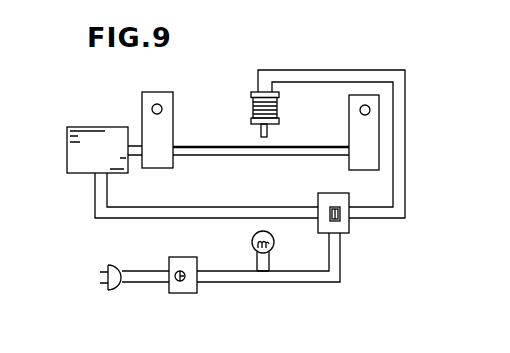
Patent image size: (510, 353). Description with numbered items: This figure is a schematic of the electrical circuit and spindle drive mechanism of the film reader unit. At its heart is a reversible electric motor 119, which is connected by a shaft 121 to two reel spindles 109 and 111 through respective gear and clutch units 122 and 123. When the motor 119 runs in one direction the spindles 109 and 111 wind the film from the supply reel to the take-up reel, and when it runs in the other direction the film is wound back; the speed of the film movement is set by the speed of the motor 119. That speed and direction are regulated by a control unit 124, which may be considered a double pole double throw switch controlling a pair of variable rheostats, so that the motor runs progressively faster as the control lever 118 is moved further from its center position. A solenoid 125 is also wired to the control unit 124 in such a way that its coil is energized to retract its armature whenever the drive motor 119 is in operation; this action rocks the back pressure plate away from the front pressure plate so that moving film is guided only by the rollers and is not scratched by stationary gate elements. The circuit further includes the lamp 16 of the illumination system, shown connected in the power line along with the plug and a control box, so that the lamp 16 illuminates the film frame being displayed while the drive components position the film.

The reversible electric motor 119 is at (103, 133).
The gear and clutch unit 122 is at (173, 133).
The spindle 109 is at (162, 109).
The shaft 121 is at (192, 154).
The gear and clutch unit 123 is at (351, 133).
The spindle 111 is at (359, 108).
The solenoid 125 is at (251, 104).
The control unit 124 is at (336, 195).
The control lever 118 is at (340, 217).
The lamp 16 is at (252, 240).